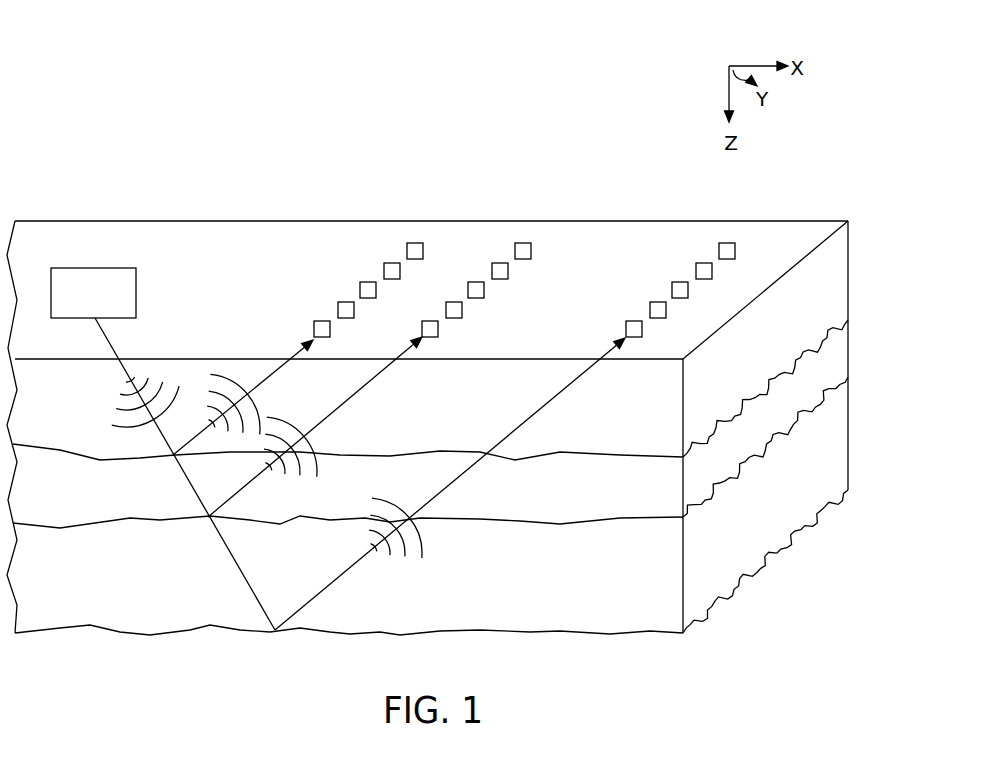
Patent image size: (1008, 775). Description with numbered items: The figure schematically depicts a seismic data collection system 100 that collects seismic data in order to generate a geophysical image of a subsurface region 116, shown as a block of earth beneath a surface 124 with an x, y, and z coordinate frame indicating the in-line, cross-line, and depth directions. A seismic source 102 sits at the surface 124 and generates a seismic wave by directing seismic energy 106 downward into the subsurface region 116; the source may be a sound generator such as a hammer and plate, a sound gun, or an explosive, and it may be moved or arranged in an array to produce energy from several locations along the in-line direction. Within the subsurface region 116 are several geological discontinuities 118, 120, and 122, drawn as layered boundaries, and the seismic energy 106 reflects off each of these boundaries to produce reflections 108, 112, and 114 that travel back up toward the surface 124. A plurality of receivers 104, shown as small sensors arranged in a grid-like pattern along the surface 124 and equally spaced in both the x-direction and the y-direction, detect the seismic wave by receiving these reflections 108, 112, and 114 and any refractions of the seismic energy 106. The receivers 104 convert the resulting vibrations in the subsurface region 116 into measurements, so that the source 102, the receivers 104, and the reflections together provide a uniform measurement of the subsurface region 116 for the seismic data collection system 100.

The seismic data collection system 100 is at (345, 323).
The seismic source 102 is at (90, 281).
The seismic receiver 104 is at (415, 249).
The seismic energy 106 is at (134, 384).
The reflection 108 is at (275, 373).
The reflection 112 is at (385, 369).
The reflection 114 is at (590, 369).
The subsurface region 116 is at (792, 322).
The geological discontinuity 118 is at (848, 320).
The geological discontinuity 120 is at (848, 377).
The geological discontinuity 122 is at (848, 490).
The surface 124 is at (325, 230).